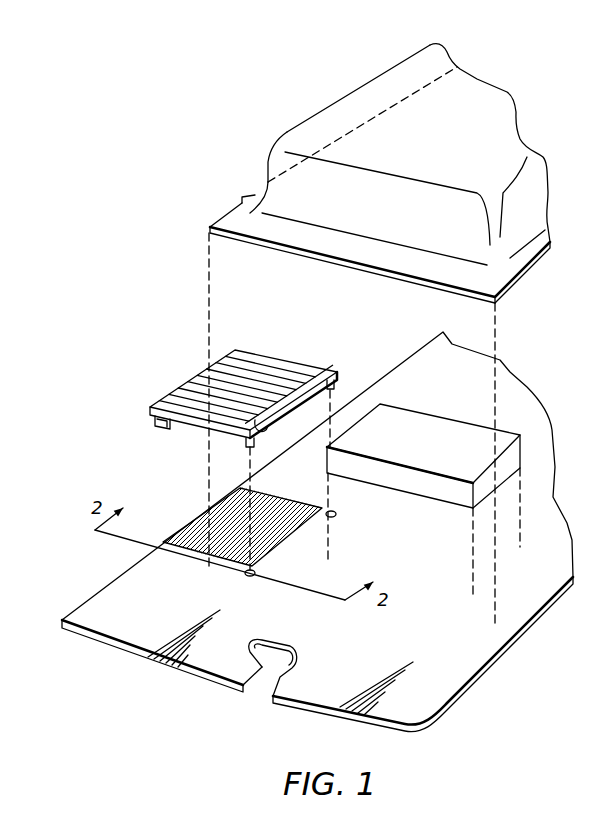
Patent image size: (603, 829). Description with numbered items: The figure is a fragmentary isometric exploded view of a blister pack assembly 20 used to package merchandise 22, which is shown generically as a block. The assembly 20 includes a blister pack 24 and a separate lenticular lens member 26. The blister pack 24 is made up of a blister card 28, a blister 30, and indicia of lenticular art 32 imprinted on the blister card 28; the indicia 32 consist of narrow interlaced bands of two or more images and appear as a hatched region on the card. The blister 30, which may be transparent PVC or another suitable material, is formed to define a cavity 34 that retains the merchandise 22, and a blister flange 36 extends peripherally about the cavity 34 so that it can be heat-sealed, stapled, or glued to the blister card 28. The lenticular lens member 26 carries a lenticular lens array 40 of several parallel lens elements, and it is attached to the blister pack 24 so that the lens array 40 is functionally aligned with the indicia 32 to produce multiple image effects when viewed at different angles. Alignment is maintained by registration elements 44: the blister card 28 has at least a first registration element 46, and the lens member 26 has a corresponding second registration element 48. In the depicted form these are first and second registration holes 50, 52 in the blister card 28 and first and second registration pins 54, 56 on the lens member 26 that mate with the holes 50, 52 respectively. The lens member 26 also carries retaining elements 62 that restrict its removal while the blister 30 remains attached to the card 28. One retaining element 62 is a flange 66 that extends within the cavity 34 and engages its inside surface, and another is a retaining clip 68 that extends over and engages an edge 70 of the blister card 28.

The blister pack assembly 20 is at (257, 82).
The blister pack 24 is at (290, 87).
The blister 30 is at (380, 75).
The cavity 34 is at (468, 123).
The blister flange 36 is at (327, 243).
The lenticular lens array 40 is at (196, 364).
The lenticular lens member 26 is at (166, 373).
The retaining elements 62 is at (136, 413).
The retaining clip 68 is at (152, 418).
The flange 66 is at (330, 370).
The registration elements 44 is at (365, 368).
The second registration pin 56 is at (343, 388).
The merchandise 22 is at (513, 448).
The edge 70 is at (197, 513).
The indicia of lenticular art 32 is at (183, 540).
The second registration element 48 is at (246, 453).
The first registration pin 54 is at (255, 448).
The second registration hole 52 is at (340, 513).
The first registration hole 50 is at (260, 570).
The blister card 28 is at (98, 613).
The first registration element 46 is at (228, 583).